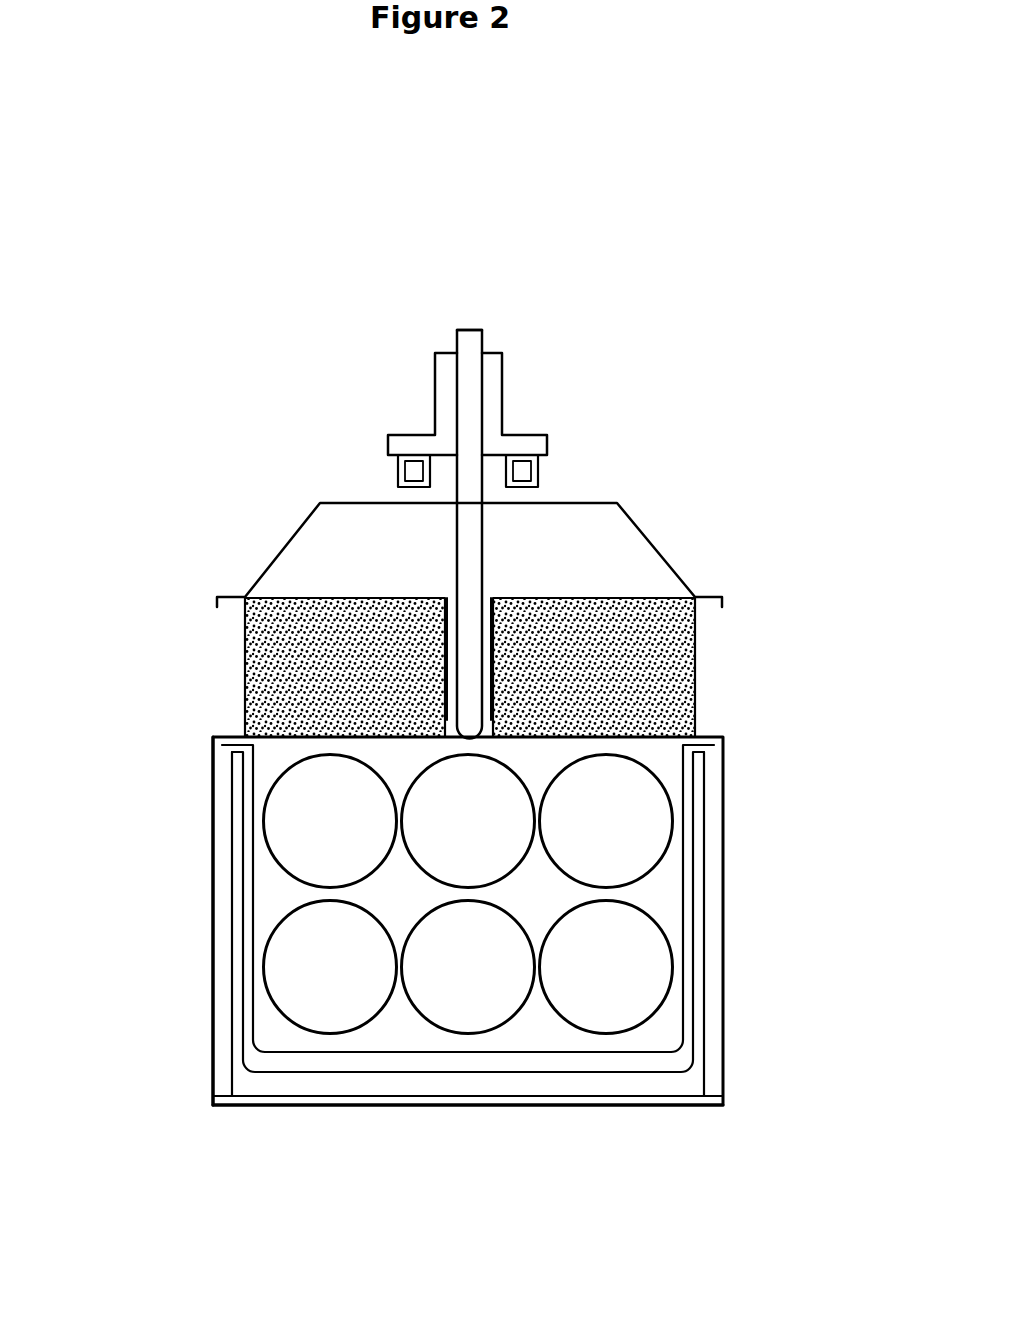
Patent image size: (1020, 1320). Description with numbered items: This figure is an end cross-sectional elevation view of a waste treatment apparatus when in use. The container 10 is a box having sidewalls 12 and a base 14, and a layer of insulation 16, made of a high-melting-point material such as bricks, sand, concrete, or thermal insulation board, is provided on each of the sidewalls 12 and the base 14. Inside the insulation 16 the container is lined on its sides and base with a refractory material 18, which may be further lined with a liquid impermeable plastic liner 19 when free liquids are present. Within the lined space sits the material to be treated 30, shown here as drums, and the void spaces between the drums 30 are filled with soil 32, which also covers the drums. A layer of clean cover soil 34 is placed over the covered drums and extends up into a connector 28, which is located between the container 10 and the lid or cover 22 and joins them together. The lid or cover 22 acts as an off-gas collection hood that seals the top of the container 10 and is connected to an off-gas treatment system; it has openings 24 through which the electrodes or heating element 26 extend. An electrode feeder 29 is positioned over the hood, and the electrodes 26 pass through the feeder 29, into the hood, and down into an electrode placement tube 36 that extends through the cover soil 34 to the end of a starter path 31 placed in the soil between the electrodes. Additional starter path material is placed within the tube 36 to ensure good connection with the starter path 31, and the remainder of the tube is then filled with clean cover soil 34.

The container 10 is at (182, 1010).
The sidewalls 12 is at (212, 916).
The base 14 is at (299, 1098).
The insulation 16 is at (223, 852).
The refractory material 18 is at (618, 1085).
The liquid impermeable liner 19 is at (688, 873).
The lid or cover 22 is at (590, 502).
The openings 24 is at (485, 505).
The electrodes or heating element 26 is at (470, 335).
The connector 28 is at (697, 642).
The electrode feeder 29 is at (488, 403).
The material to be treated 30 is at (302, 787).
The starter path 31 is at (438, 709).
The soil 32 is at (393, 1062).
The cover soil 34 is at (647, 623).
The placement tube 36 is at (495, 597).